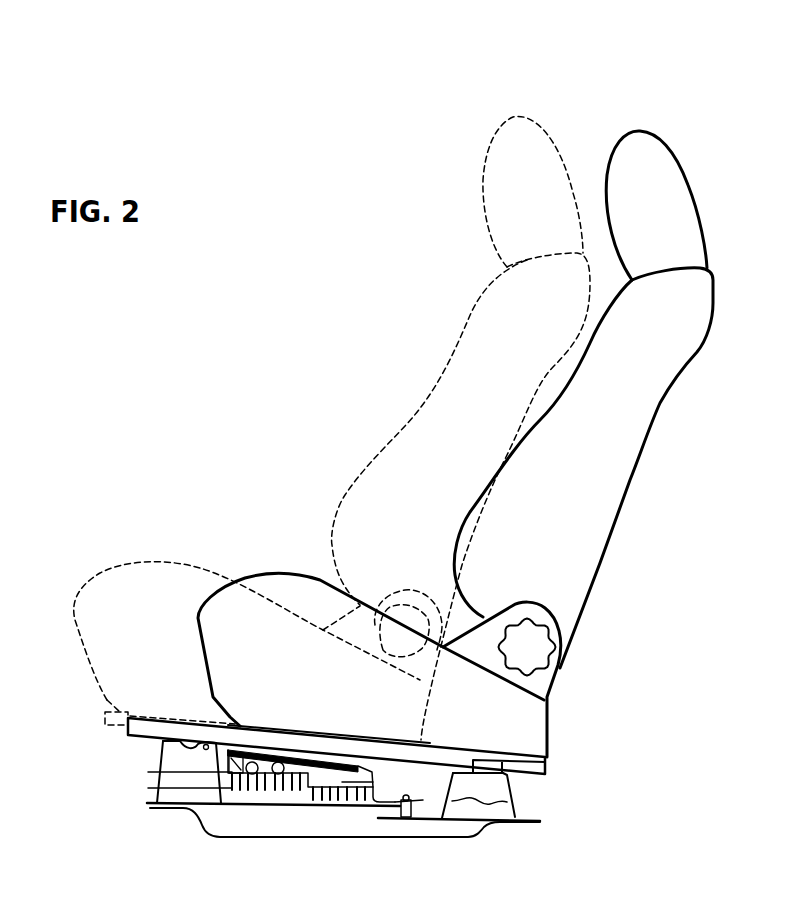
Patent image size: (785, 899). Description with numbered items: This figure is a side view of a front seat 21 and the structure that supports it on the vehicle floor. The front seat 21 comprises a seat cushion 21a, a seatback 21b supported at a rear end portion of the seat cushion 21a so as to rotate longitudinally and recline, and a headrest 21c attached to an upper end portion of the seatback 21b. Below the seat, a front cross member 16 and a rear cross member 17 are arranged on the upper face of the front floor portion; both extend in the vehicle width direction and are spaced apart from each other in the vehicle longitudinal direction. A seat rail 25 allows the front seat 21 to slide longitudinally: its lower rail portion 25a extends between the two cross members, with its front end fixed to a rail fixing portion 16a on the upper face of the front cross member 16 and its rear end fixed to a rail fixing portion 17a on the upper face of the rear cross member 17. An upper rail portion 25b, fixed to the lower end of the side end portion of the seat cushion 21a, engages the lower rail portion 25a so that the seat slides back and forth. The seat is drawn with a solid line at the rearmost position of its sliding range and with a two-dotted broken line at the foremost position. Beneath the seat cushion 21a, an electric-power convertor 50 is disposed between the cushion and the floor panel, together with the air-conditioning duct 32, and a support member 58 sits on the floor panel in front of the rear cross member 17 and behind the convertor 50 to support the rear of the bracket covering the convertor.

The front seat 21 is at (553, 127).
The seat cushion 21a is at (247, 580).
The seatback 21b is at (540, 423).
The headrest 21c is at (605, 182).
The front cross member 16 is at (157, 752).
The rail fixing portion 16a is at (170, 740).
The rear cross member 17 is at (512, 800).
The rail fixing portion 17a is at (473, 760).
The seat rail 25 is at (638, 712).
The lower rail portion 25a is at (495, 760).
The upper rail portion 25b is at (545, 765).
The air-conditioning duct 32 is at (174, 788).
The electric-power convertor 50 is at (303, 800).
The support member 58 is at (377, 818).